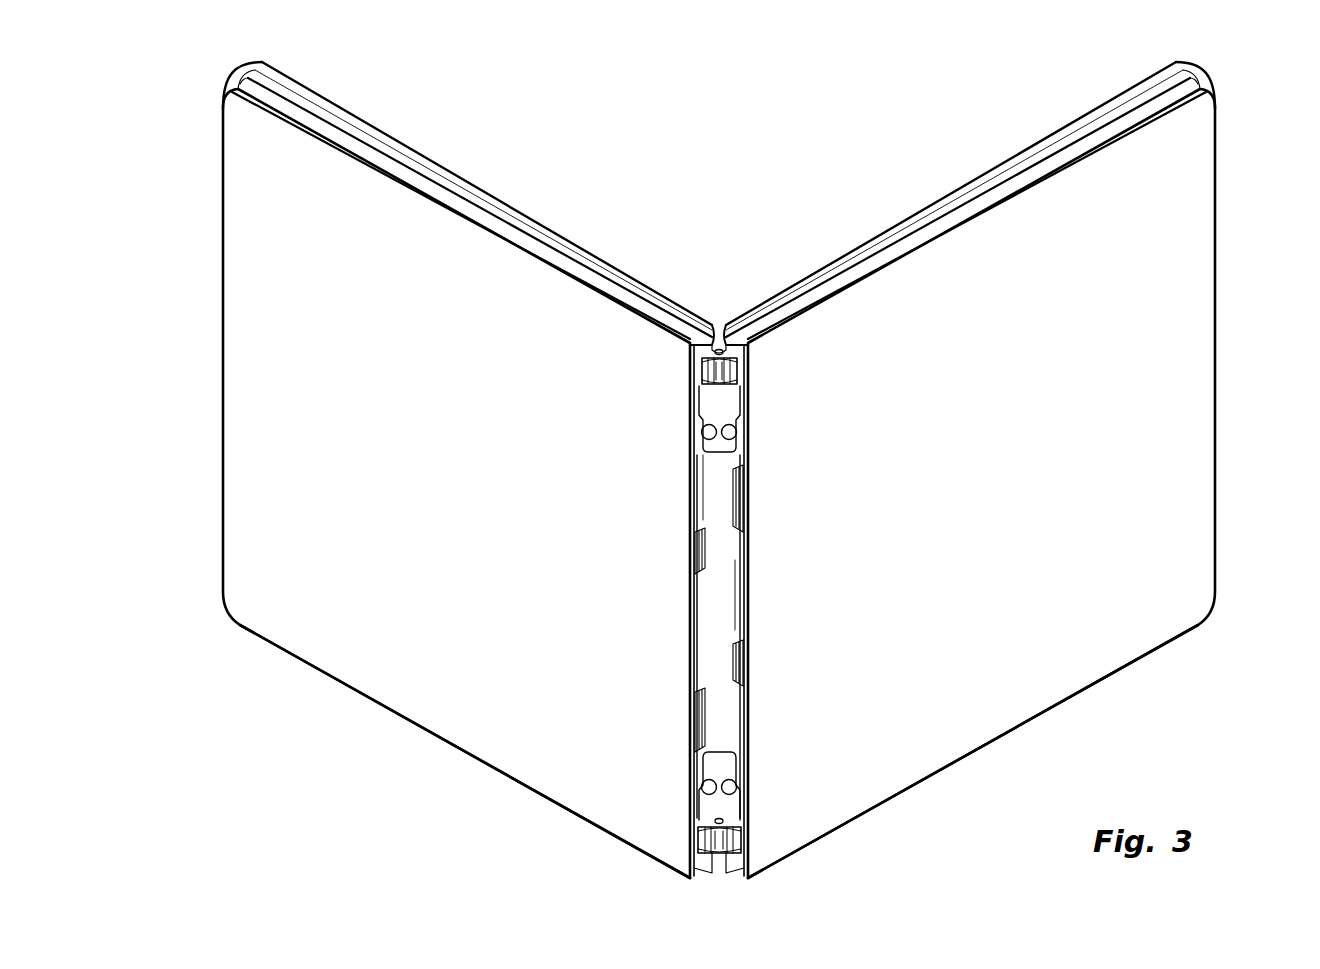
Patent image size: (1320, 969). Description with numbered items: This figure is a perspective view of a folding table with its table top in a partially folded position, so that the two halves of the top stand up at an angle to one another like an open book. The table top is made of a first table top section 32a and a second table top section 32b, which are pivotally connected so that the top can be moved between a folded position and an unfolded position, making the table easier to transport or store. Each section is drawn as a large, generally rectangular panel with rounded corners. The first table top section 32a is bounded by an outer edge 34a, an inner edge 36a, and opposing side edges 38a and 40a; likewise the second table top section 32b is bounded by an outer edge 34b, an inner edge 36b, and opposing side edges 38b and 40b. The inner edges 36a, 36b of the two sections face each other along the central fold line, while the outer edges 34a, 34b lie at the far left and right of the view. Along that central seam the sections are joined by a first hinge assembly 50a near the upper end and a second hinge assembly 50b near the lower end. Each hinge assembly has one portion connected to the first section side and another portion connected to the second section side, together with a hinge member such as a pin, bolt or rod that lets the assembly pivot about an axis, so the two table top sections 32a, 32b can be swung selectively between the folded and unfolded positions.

The first table top section 32a is at (566, 297).
The second table top section 32b is at (1072, 173).
The outer edge 34a is at (423, 470).
The outer edge 34b is at (1014, 470).
The inner edge 36a is at (693, 592).
The inner edge 36b is at (750, 593).
The side edge 38a is at (425, 733).
The side edge 38b is at (950, 776).
The side edge 40a is at (480, 202).
The side edge 40b is at (993, 183).
The first hinge assembly 50a is at (750, 372).
The second hinge assembly 50b is at (755, 818).